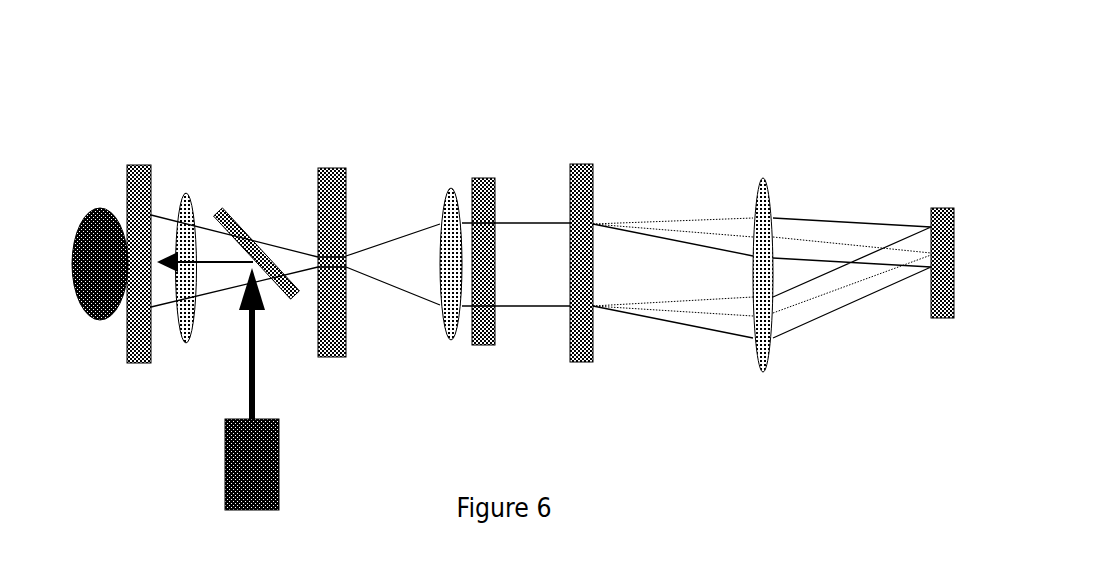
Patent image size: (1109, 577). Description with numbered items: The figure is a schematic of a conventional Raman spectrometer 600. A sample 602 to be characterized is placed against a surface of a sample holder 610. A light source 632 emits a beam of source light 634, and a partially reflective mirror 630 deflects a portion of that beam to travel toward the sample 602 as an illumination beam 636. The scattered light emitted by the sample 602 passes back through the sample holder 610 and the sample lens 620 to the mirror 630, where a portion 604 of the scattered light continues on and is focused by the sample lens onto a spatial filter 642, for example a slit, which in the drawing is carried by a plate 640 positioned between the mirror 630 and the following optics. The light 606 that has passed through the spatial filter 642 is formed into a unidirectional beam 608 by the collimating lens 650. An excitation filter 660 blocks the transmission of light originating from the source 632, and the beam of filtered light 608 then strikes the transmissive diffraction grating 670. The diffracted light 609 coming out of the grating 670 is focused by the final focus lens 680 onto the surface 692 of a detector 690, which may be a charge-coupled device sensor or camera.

The Raman spectrometer 600 is at (403, 64).
The sample 602 is at (102, 213).
The portion of the scattered light 604 is at (304, 276).
The light that has passed through the spatial filter 606 is at (394, 307).
The unidirectional beam 608 is at (529, 326).
The diffracted light 609 is at (680, 360).
The sample holder 610 is at (140, 185).
The sample lens 620 is at (191, 197).
The partially reflective mirror 630 is at (235, 218).
The light source 632 is at (225, 477).
The beam of source light 634 is at (248, 383).
The illumination beam 636 is at (210, 264).
The aperture plate 640 is at (332, 168).
The spatial filter 642 is at (364, 252).
The collimating lens 650 is at (451, 192).
The excitation filter 660 is at (483, 192).
The transmissive diffraction grating 670 is at (583, 170).
The final focus lens 680 is at (763, 183).
The detector 690 is at (948, 208).
The surface of the detector 692 is at (918, 275).